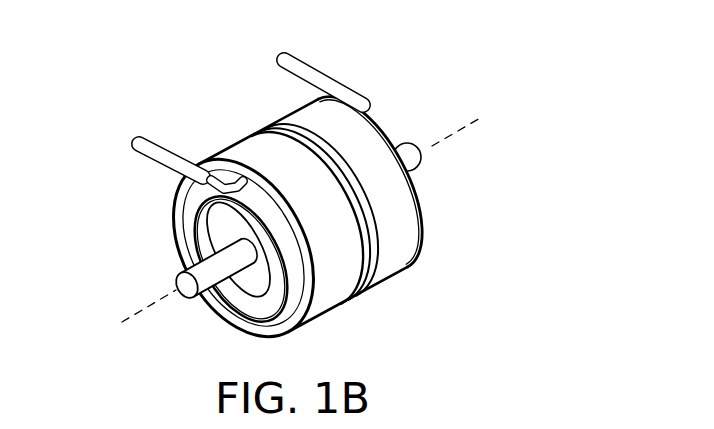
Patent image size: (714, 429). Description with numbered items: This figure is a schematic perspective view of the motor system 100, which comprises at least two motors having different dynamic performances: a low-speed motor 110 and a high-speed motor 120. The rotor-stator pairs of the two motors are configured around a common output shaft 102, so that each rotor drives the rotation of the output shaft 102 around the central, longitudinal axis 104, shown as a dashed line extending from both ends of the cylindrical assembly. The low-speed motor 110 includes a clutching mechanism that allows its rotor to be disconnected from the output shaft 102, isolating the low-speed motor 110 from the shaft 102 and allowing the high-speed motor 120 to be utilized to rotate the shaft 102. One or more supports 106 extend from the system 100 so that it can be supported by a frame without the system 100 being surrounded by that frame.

The system 100 is at (139, 83).
The output shaft 102 is at (178, 289).
The central, longitudinal axis 104 is at (457, 126).
The supports 106 is at (337, 86).
The motor 110 is at (283, 217).
The high-speed motor 120 is at (284, 107).